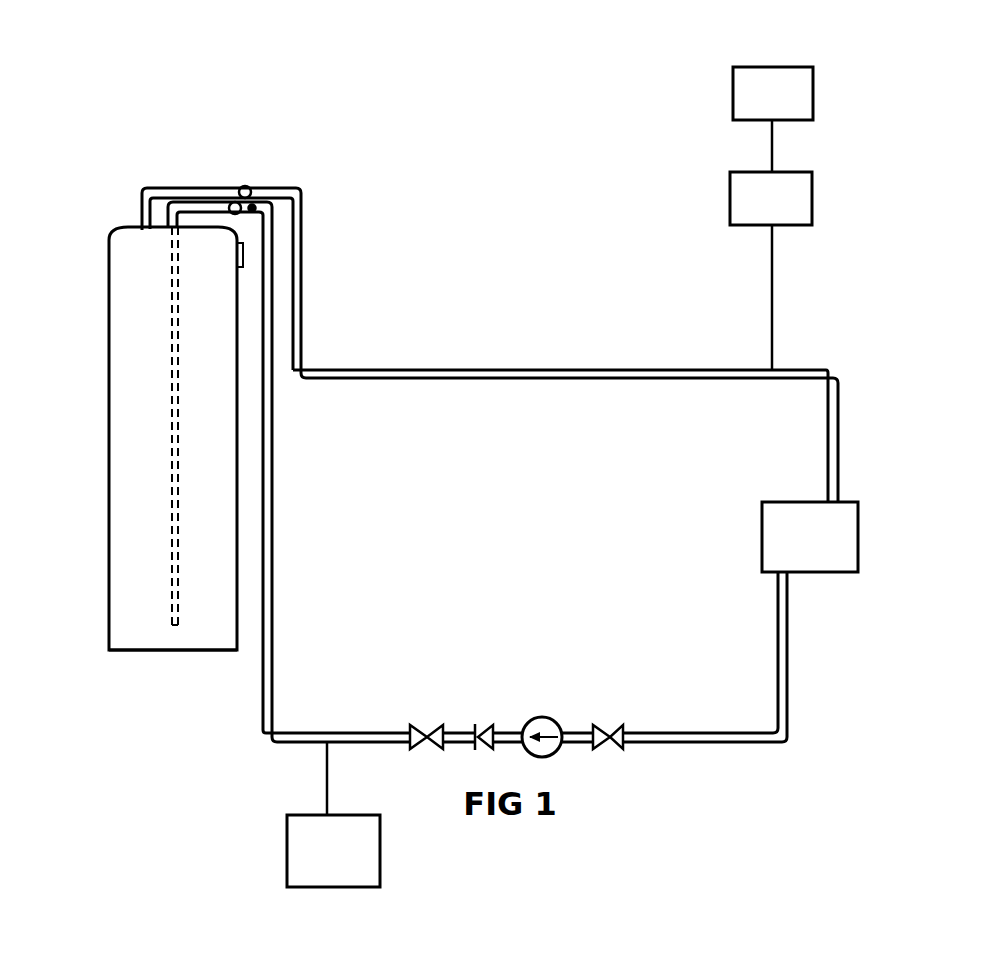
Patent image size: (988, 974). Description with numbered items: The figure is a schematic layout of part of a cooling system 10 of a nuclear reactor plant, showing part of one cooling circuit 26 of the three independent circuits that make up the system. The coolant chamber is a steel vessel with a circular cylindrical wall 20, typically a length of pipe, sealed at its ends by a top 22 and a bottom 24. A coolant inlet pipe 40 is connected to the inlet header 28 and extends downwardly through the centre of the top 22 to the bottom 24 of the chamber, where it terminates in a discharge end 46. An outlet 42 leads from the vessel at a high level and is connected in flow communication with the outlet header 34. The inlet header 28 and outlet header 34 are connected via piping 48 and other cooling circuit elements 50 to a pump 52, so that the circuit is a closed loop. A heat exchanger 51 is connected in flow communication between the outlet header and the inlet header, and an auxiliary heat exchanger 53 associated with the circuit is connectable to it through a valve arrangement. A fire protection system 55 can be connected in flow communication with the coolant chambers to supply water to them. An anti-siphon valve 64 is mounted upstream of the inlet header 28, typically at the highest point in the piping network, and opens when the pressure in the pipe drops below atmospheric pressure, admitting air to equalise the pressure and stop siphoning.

The cooling system 10 is at (567, 190).
The circular cylindrical wall 20 is at (135, 526).
The top 22 is at (128, 227).
The bottom 24 is at (177, 650).
The cooling circuit 26 is at (603, 325).
The inlet header 28 is at (230, 204).
The outlet header 34 is at (250, 187).
The coolant inlet pipe 40 is at (167, 445).
The outlet 42 is at (203, 192).
The discharge end 46 is at (170, 627).
The piping 48 is at (530, 370).
The cooling circuit elements 50 is at (757, 497).
The heat exchanger 51 is at (837, 165).
The pump 52 is at (542, 727).
The auxiliary heat exchanger 53 is at (827, 68).
The fire protection system 55 is at (262, 885).
The anti-siphon valve 64 is at (257, 203).